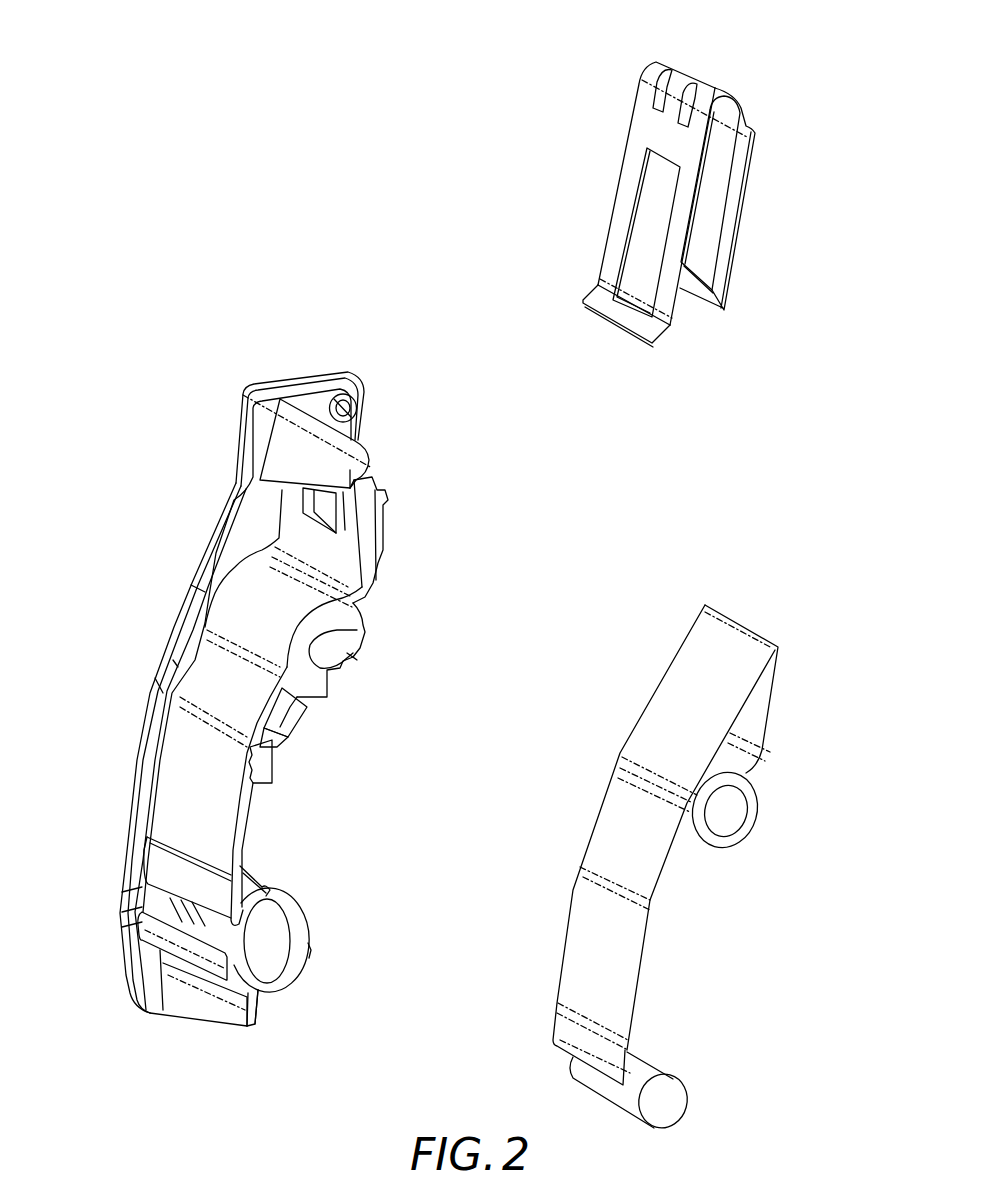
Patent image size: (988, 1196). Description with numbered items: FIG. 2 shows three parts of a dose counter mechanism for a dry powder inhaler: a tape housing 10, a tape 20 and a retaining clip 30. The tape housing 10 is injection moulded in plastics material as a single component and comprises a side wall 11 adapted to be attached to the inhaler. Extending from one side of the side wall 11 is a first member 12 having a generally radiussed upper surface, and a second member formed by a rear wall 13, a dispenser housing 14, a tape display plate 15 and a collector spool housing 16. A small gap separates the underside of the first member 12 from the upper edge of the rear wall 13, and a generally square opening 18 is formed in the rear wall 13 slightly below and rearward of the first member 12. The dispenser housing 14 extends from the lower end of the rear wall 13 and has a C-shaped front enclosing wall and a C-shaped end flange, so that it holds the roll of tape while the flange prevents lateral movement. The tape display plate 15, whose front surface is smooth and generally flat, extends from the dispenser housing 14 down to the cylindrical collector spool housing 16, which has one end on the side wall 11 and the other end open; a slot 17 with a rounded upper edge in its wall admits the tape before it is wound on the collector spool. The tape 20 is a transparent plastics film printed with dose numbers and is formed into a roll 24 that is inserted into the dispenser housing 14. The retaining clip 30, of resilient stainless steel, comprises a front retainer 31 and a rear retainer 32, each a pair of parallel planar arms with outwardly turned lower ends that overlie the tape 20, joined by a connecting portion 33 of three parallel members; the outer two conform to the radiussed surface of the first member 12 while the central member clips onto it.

The tape housing 10 is at (204, 392).
The side wall 11 is at (217, 553).
The first member 12 is at (340, 438).
The rear wall 13 is at (373, 563).
The dispenser housing 14 is at (318, 680).
The tape display plate 15 is at (243, 826).
The collector spool housing 16 is at (305, 913).
The slot 17 is at (165, 903).
The opening 18 is at (333, 505).
The tape 20 is at (797, 654).
The roll 24 is at (730, 814).
The retaining clip 30 is at (792, 127).
The front retainer 31 is at (624, 214).
The rear retainer 32 is at (730, 222).
The connecting portion 33 is at (660, 62).